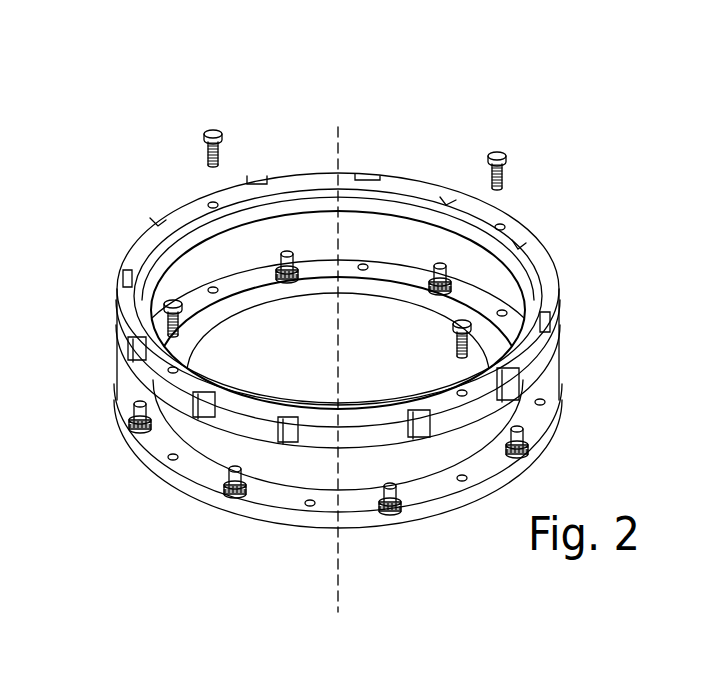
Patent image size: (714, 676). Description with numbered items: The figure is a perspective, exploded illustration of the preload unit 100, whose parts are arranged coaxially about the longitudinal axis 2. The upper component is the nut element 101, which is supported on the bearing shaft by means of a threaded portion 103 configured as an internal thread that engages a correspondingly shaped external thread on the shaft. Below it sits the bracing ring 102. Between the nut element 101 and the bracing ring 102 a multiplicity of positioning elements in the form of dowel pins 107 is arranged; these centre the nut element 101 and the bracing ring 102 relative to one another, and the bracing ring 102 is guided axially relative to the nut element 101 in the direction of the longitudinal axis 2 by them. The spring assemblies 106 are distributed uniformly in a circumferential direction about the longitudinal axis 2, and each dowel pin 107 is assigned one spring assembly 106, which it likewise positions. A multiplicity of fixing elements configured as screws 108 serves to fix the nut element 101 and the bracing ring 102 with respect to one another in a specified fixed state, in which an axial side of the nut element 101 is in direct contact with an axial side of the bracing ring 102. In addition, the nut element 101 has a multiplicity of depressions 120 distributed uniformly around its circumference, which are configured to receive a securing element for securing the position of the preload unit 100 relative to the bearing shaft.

The preload unit 100 is at (152, 106).
The nut element 101 is at (410, 197).
The bracing ring 102 is at (547, 383).
The threaded portion 103 is at (500, 277).
The spring assembly 106 is at (227, 492).
The dowel pin 107 is at (128, 410).
The screw 108 is at (507, 168).
The depression 120 is at (158, 222).
The longitudinal axis 2 is at (338, 140).